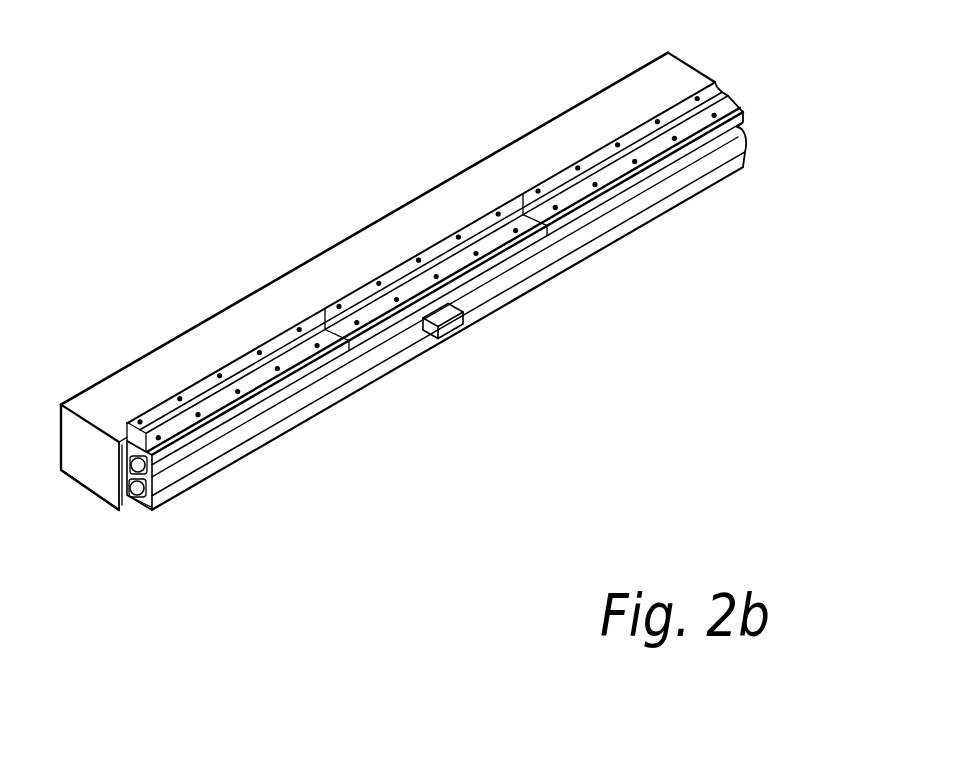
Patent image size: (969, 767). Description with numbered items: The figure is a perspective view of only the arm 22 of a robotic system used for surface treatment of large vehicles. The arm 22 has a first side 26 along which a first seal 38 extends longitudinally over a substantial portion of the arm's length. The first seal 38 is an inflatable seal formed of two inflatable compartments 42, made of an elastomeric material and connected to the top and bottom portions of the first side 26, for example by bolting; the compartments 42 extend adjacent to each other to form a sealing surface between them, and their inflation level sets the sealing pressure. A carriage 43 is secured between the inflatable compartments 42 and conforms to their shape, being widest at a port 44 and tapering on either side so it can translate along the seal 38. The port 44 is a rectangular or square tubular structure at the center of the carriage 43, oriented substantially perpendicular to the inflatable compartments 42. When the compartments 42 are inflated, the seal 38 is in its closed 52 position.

The arm 22 is at (343, 205).
The first side 26 is at (118, 492).
The first seal 38 is at (360, 411).
The inflatable compartments 42 is at (153, 488).
The carriage 43 is at (461, 297).
The port 44 is at (461, 338).
The closed position 52 is at (750, 132).